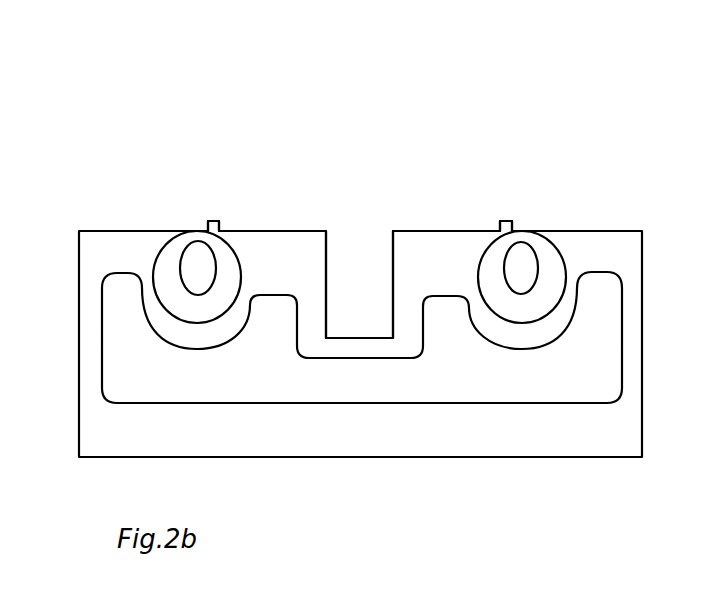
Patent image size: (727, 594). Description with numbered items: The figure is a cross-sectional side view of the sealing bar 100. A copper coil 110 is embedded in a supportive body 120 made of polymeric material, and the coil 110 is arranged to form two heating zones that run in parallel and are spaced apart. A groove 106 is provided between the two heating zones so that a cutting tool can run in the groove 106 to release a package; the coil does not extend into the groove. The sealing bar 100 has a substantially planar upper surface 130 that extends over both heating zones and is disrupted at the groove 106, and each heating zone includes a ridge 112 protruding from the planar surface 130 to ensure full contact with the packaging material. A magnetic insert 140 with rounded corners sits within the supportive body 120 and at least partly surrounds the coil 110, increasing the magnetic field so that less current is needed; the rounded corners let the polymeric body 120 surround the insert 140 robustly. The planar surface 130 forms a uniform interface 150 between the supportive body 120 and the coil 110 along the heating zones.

The sealing bar 100 is at (382, 96).
The groove 106 is at (348, 260).
The coil 110 is at (177, 232).
The ridge 112 is at (215, 222).
The supportive body 120 is at (275, 232).
The upper surface 130 is at (109, 228).
The magnetic insert 140 is at (138, 358).
The uniform interface 150 is at (162, 223).